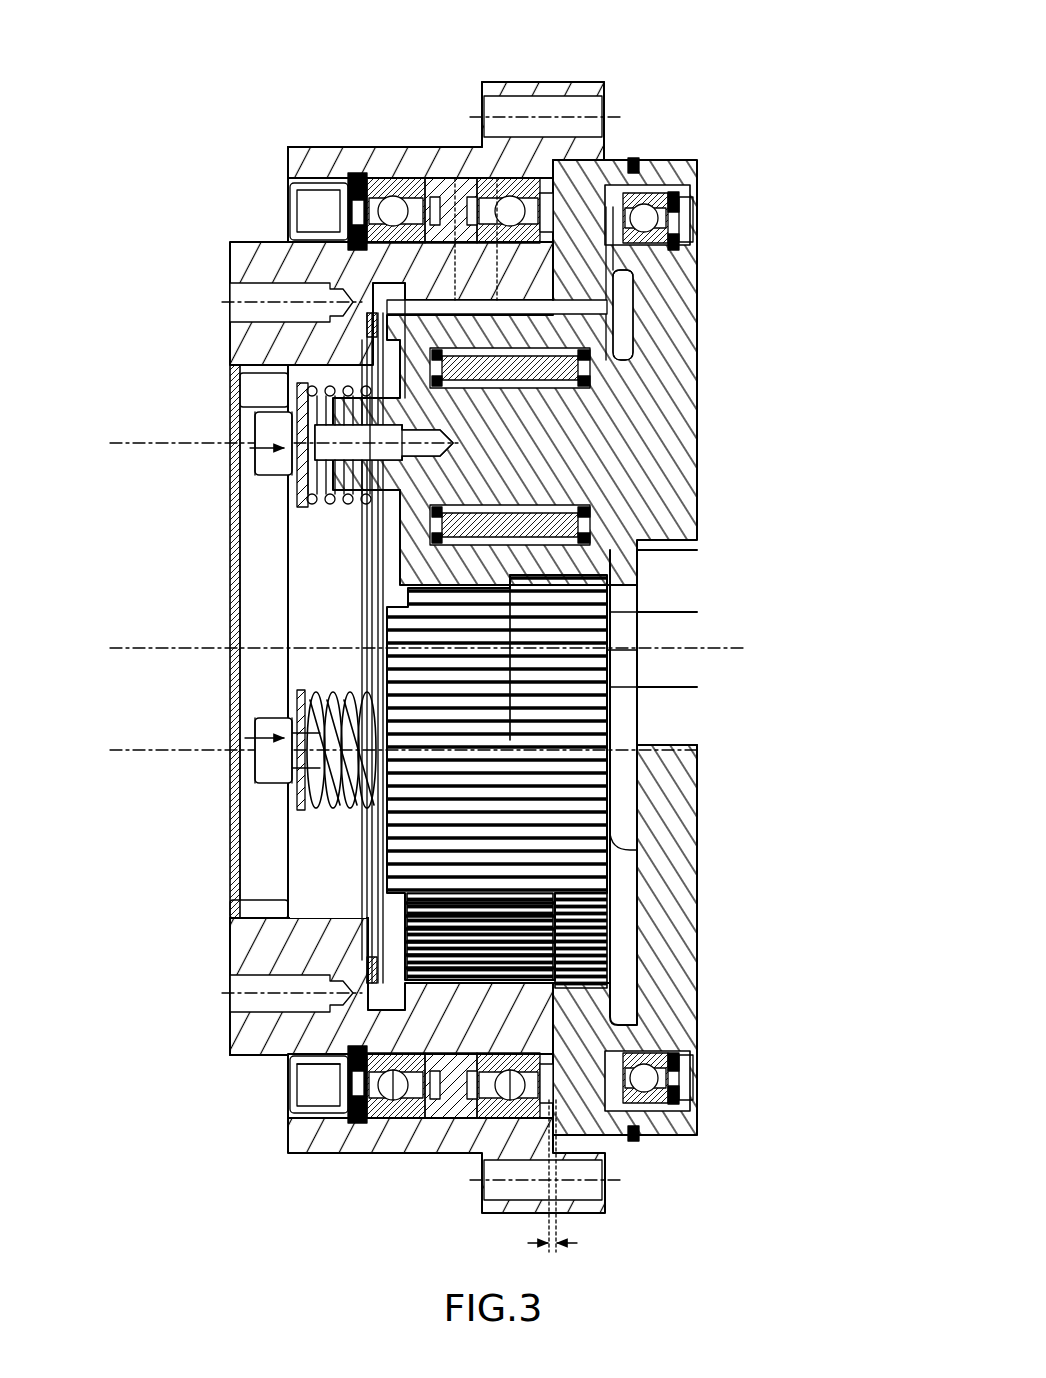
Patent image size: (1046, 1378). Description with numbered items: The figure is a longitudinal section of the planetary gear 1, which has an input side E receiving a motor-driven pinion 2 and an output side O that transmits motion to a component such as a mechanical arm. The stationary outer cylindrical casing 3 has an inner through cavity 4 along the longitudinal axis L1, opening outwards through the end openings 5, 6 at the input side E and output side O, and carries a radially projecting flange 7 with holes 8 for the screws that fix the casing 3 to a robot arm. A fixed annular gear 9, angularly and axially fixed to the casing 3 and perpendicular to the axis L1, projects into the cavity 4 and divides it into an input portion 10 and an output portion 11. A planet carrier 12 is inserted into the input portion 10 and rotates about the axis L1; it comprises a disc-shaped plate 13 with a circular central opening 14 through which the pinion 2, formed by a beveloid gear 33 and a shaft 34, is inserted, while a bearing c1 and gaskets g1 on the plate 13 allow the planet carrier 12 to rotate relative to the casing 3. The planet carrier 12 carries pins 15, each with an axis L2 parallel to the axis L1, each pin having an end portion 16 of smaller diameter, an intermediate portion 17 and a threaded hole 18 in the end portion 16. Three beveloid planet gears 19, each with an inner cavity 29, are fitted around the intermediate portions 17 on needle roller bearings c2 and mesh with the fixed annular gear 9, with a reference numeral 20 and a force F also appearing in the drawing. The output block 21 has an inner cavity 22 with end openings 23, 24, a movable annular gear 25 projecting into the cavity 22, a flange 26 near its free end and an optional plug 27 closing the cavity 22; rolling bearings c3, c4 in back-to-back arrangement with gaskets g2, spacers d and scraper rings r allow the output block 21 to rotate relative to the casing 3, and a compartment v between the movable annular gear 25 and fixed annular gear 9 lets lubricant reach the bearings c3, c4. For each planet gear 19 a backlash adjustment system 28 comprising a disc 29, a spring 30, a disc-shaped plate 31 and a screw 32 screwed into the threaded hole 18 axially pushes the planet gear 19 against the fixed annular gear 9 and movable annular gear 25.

The planetary gear 1 is at (722, 80).
The pinion 2 is at (660, 640).
The outer cylindrical casing 3 is at (418, 126).
The inner through cavity 4 is at (690, 225).
The end opening 5 is at (700, 1081).
The end opening 6 is at (287, 1110).
The flange 7 is at (560, 90).
The holes 8 is at (588, 98).
The fixed annular gear 9 is at (590, 1030).
The input portion 10 is at (590, 1035).
The output portion 11 is at (370, 1058).
The planet carrier 12 is at (699, 482).
The disc-shaped plate 13 is at (682, 840).
The central opening 14 is at (668, 745).
The pins 15 is at (380, 595).
The end portion 16 is at (300, 575).
The intermediate portion 17 is at (412, 152).
The threaded hole 18 is at (300, 455).
The planet gears 19 is at (455, 340).
The cap 20 is at (367, 378).
The output block 21 is at (240, 240).
The inner cavity 22 is at (325, 912).
The end opening 23 is at (625, 300).
The end opening 24 is at (234, 925).
The movable annular gear 25 is at (500, 330).
The flange 26 is at (300, 918).
The plug 27 is at (245, 740).
The backlash adjustment system 28 is at (270, 430).
The disc 29 is at (372, 505).
The spring 30 is at (332, 502).
The disc-shaped plate 31 is at (280, 445).
The screw 32 is at (268, 462).
The gear 33 is at (583, 664).
The shaft 34 is at (685, 636).
The bearing c1 is at (650, 200).
The bearings c2 is at (630, 355).
The rolling bearing c3 is at (395, 1112).
The rolling bearing c4 is at (495, 1118).
The gaskets g1 is at (696, 212).
The gaskets g2 is at (375, 1122).
The scraper rings r is at (335, 1118).
The spacers d is at (445, 1118).
The compartment v is at (559, 1177).
The force F is at (262, 450).
The longitudinal axis L1 is at (140, 648).
The pin axis L2 is at (162, 443).
The output side O is at (172, 354).
The input side E is at (762, 418).